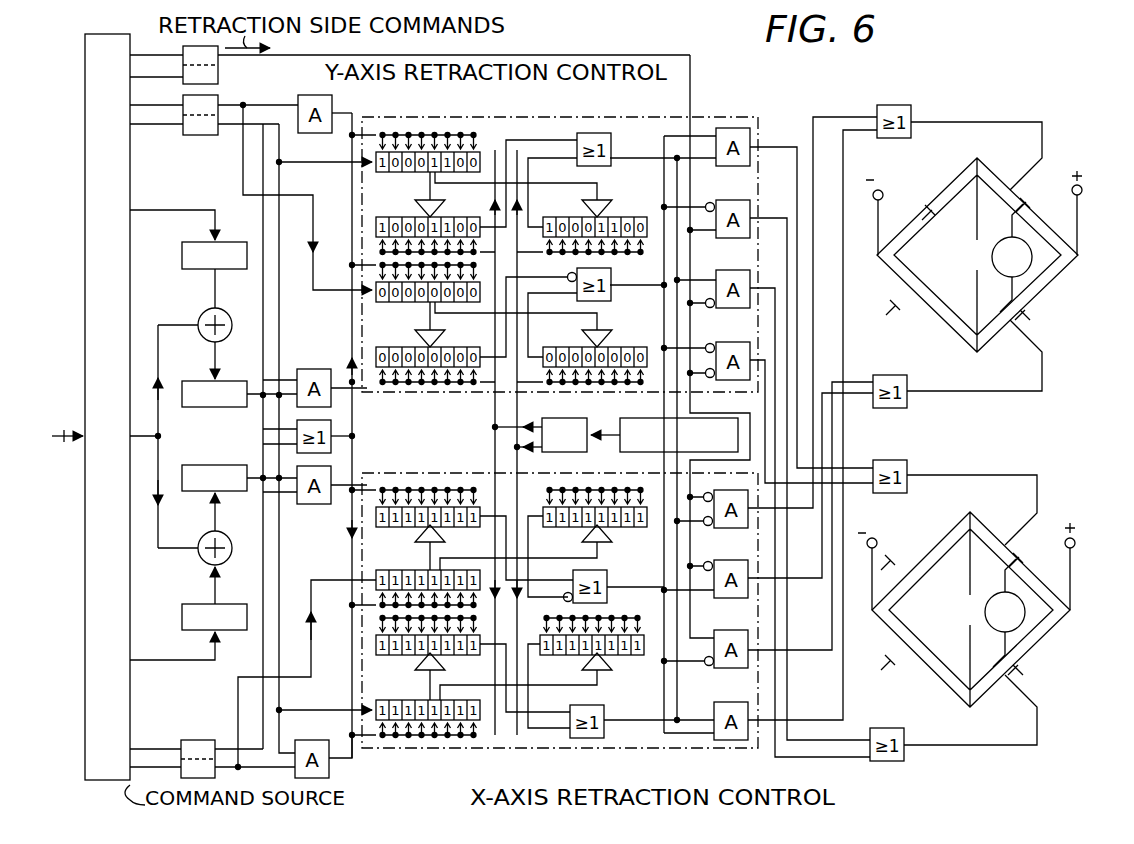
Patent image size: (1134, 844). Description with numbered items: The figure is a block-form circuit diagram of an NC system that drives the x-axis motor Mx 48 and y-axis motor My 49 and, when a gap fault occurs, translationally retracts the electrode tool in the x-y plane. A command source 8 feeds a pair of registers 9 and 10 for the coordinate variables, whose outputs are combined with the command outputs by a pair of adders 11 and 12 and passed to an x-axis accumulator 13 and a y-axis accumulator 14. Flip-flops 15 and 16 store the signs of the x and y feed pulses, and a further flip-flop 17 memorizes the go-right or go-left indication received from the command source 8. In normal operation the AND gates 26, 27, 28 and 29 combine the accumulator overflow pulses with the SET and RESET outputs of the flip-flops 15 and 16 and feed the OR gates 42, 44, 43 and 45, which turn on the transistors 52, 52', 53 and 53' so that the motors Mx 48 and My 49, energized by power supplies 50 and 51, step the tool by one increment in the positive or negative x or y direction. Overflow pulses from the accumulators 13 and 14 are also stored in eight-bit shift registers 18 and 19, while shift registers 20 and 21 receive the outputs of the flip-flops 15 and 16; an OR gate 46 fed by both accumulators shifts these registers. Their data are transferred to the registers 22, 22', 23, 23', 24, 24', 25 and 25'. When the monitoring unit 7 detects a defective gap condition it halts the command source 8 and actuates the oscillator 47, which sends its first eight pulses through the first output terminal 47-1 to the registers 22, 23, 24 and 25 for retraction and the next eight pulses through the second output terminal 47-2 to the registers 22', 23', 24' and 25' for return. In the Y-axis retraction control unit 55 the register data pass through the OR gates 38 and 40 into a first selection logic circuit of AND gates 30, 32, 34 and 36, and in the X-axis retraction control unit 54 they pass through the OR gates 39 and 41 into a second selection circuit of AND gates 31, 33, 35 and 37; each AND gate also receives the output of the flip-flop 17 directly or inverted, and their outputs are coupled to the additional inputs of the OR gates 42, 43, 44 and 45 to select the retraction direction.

The monitoring unit 7 is at (626, 452).
The command source 8 is at (85, 377).
The register 9 is at (182, 256).
The register 10 is at (182, 616).
The adder 11 is at (200, 324).
The adder 12 is at (200, 561).
The x-axis accumulator 13 is at (186, 407).
The y-axis accumulator 14 is at (232, 458).
The flip-flop 15 is at (190, 135).
The flip-flop 16 is at (190, 740).
The flip-flop 17 is at (218, 75).
The shift register 18 is at (483, 144).
The shift register 19 is at (475, 735).
The shift register 20 is at (385, 304).
The shift register 21 is at (393, 570).
The register 22 is at (587, 206).
The register 22' is at (474, 197).
The register 23 is at (586, 672).
The register 23' is at (469, 664).
The register 24 is at (587, 339).
The register 24' is at (465, 331).
The register 25 is at (587, 543).
The register 25' is at (473, 534).
The AND gate 26 is at (326, 97).
The AND gate 27 is at (318, 740).
The AND gate 28 is at (310, 372).
The AND gate 29 is at (310, 505).
The AND gate 30 is at (742, 130).
The AND gate 31 is at (718, 710).
The AND gate 32 is at (742, 202).
The AND gate 33 is at (718, 635).
The AND gate 34 is at (740, 272).
The AND gate 35 is at (738, 552).
The AND gate 36 is at (735, 343).
The AND gate 37 is at (718, 500).
The OR gate 38 is at (610, 135).
The OR gate 39 is at (600, 738).
The OR gate 40 is at (610, 270).
The OR gate 41 is at (605, 573).
The OR gate 42 is at (900, 138).
The OR gate 43 is at (882, 723).
The OR gate 44 is at (885, 368).
The OR gate 45 is at (883, 460).
The OR gate 46 is at (331, 426).
The oscillator 47 is at (597, 418).
The first output terminal 47-1 is at (523, 448).
The second output terminal 47-2 is at (513, 426).
The motor Mx 48 is at (1024, 237).
The motor My 49 is at (1019, 592).
The power supply 50 is at (882, 190).
The power supply 51 is at (876, 540).
The transistors 52 is at (955, 237).
The transistors 52' is at (979, 268).
The transistors 53 is at (967, 619).
The transistors 53' is at (947, 586).
The X-axis retraction control unit 54 is at (520, 748).
The Y-axis retraction control unit 55 is at (453, 117).